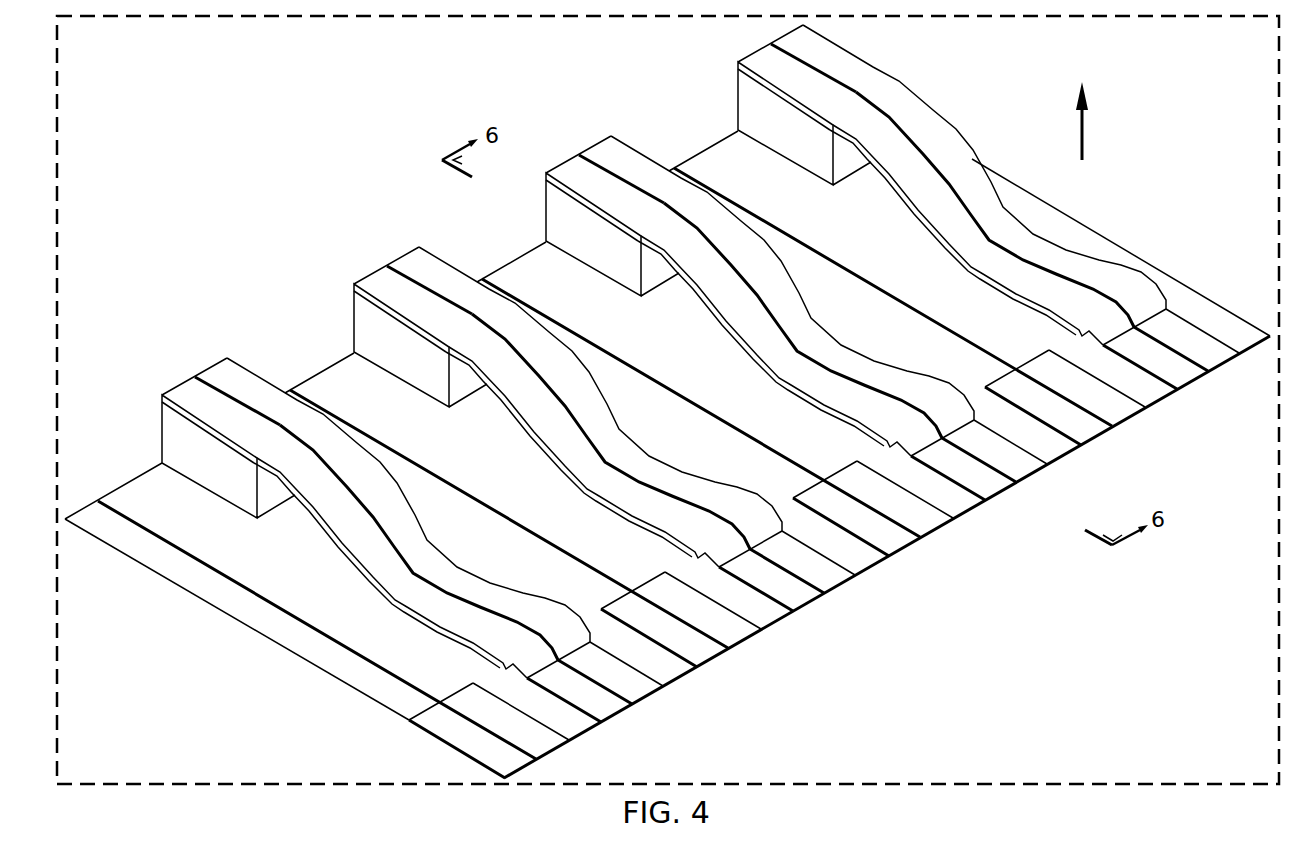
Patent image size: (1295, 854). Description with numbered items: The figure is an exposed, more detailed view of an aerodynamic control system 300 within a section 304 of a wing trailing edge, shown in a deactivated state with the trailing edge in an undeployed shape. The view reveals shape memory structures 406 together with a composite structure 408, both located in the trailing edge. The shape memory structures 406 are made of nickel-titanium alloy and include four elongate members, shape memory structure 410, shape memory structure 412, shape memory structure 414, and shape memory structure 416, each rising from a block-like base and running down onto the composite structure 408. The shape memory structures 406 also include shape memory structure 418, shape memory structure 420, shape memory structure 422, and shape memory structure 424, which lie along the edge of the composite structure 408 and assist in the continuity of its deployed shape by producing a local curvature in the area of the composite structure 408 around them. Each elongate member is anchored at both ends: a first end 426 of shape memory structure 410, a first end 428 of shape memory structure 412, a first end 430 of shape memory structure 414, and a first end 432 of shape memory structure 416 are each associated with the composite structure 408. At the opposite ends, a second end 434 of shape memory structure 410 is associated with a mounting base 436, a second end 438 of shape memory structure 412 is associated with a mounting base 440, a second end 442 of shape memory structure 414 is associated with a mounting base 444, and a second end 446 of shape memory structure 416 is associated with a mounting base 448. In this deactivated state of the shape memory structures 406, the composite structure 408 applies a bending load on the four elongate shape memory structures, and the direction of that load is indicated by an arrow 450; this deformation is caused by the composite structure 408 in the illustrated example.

The aerodynamic control system 300 is at (166, 91).
The section 304 is at (283, 787).
The shape memory structures 406 is at (393, 98).
The composite structure 408 is at (132, 480).
The shape memory structure 410 is at (843, 53).
The shape memory structure 412 is at (614, 134).
The shape memory structure 414 is at (424, 249).
The shape memory structure 416 is at (238, 372).
The shape memory structure 418 is at (1090, 439).
The shape memory structure 420 is at (898, 551).
The shape memory structure 422 is at (704, 660).
The shape memory structure 424 is at (462, 744).
The first end 426 is at (1182, 378).
The first end 428 is at (998, 495).
The first end 430 is at (806, 606).
The first end 432 is at (611, 711).
The second end 434 is at (762, 53).
The mounting base 436 is at (744, 101).
The second end 438 is at (562, 163).
The mounting base 440 is at (550, 212).
The second end 442 is at (372, 274).
The mounting base 444 is at (356, 324).
The second end 446 is at (180, 392).
The mounting base 448 is at (168, 419).
The arrow 450 is at (1085, 128).